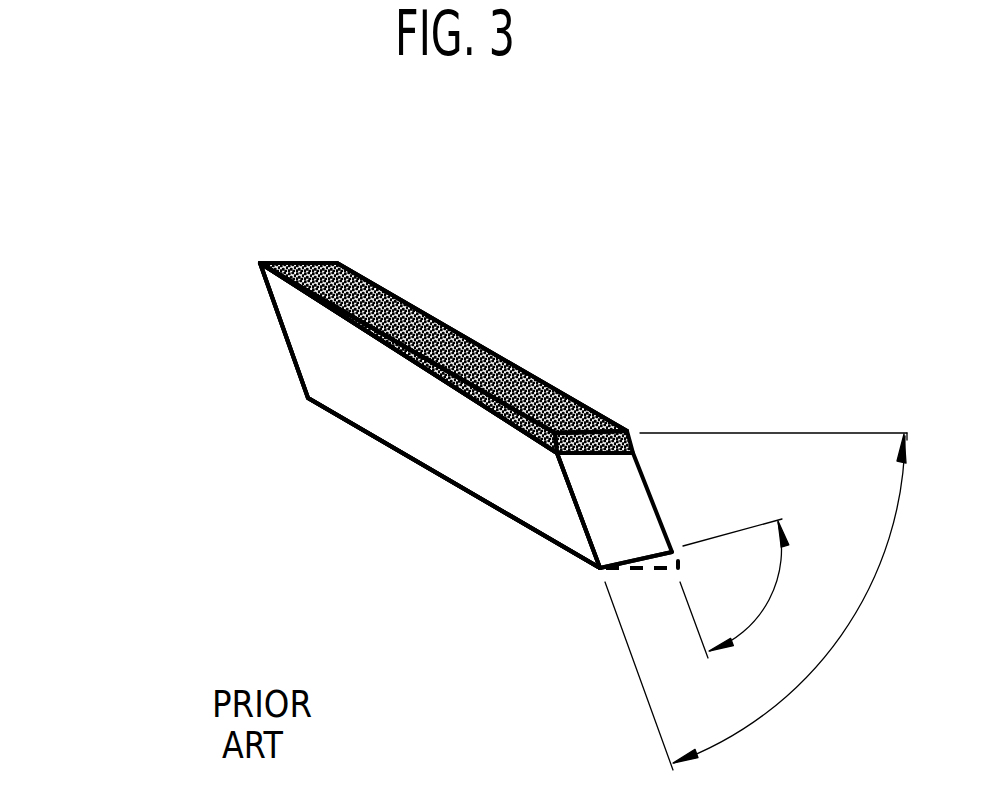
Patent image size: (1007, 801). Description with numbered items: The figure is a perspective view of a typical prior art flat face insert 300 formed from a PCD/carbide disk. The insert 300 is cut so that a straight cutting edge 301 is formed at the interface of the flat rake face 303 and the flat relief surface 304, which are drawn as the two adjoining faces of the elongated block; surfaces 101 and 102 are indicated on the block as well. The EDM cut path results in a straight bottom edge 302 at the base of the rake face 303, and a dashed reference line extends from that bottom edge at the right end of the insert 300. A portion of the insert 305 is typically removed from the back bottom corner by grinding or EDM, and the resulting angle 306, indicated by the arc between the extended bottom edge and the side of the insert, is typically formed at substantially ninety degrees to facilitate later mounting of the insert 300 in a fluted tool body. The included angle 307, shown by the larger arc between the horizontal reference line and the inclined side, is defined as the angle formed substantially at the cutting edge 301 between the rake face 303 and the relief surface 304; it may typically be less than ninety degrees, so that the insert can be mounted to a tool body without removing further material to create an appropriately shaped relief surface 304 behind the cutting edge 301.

The flat face insert 300 is at (478, 192).
The top surface 101 is at (350, 310).
The front side surface 102 is at (355, 415).
The straight cutting edge 301 is at (486, 358).
The straight bottom edge 302 is at (421, 496).
The flat rake face 303 is at (418, 415).
The flat relief surface 304 is at (449, 321).
The removed portion of the insert 305 is at (585, 615).
The angle 306 is at (738, 588).
The included angle 307 is at (756, 601).